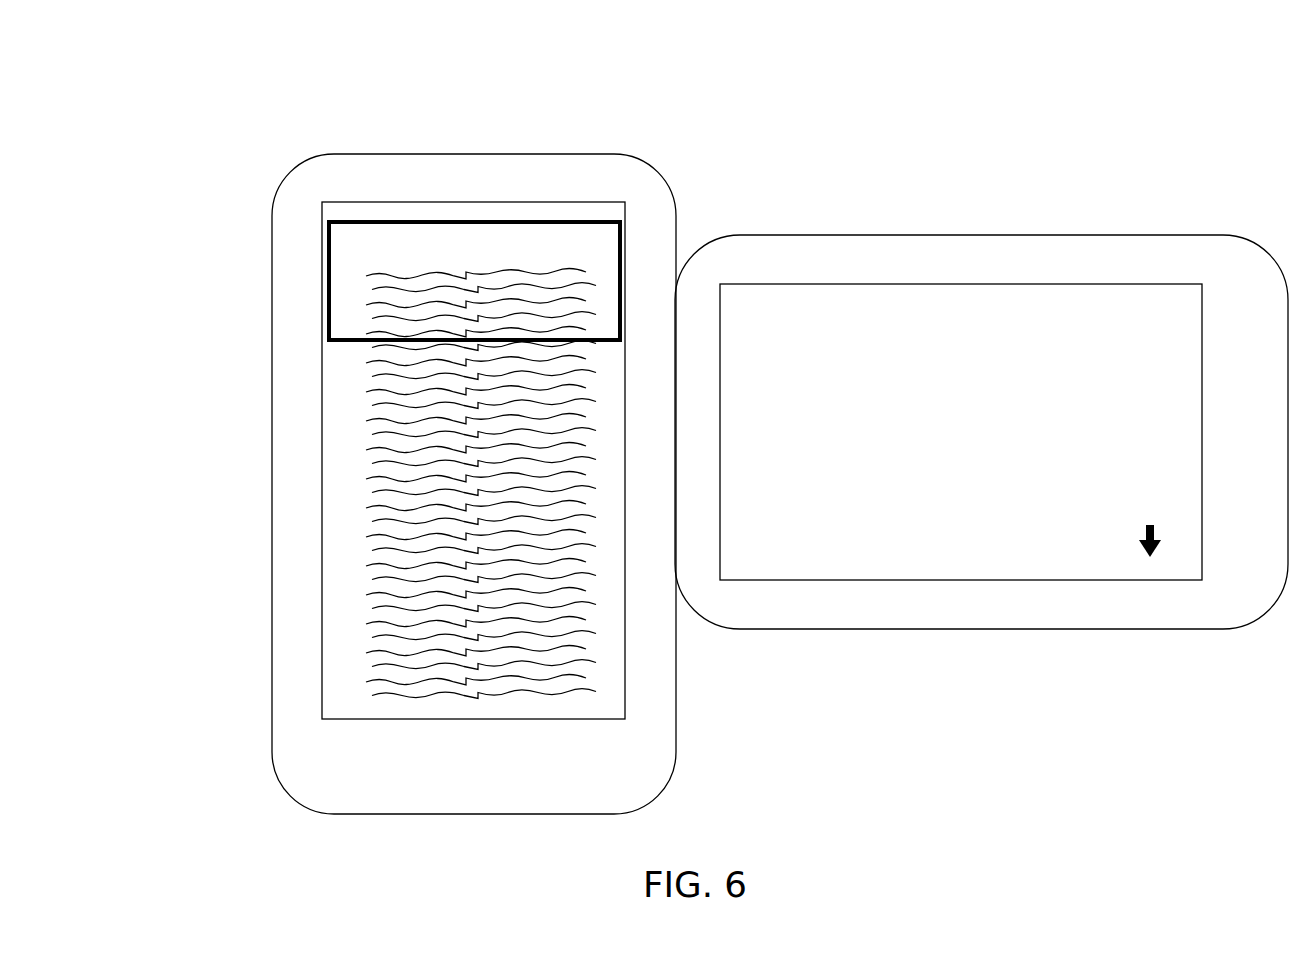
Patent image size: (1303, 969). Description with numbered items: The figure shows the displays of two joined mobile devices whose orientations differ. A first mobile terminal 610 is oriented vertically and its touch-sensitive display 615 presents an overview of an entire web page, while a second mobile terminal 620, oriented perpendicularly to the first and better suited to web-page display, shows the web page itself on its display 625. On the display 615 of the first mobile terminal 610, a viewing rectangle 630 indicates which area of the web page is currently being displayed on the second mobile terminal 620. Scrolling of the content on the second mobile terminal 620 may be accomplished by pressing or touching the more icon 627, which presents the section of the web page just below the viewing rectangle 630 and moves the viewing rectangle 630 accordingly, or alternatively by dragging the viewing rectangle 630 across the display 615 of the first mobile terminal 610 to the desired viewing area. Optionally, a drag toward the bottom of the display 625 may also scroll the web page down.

The first mobile terminal 610 is at (272, 235).
The display 615 is at (342, 398).
The second mobile terminal 620 is at (885, 235).
The display 625 is at (977, 305).
The more icon 627 is at (1113, 558).
The viewing rectangle 630 is at (562, 222).